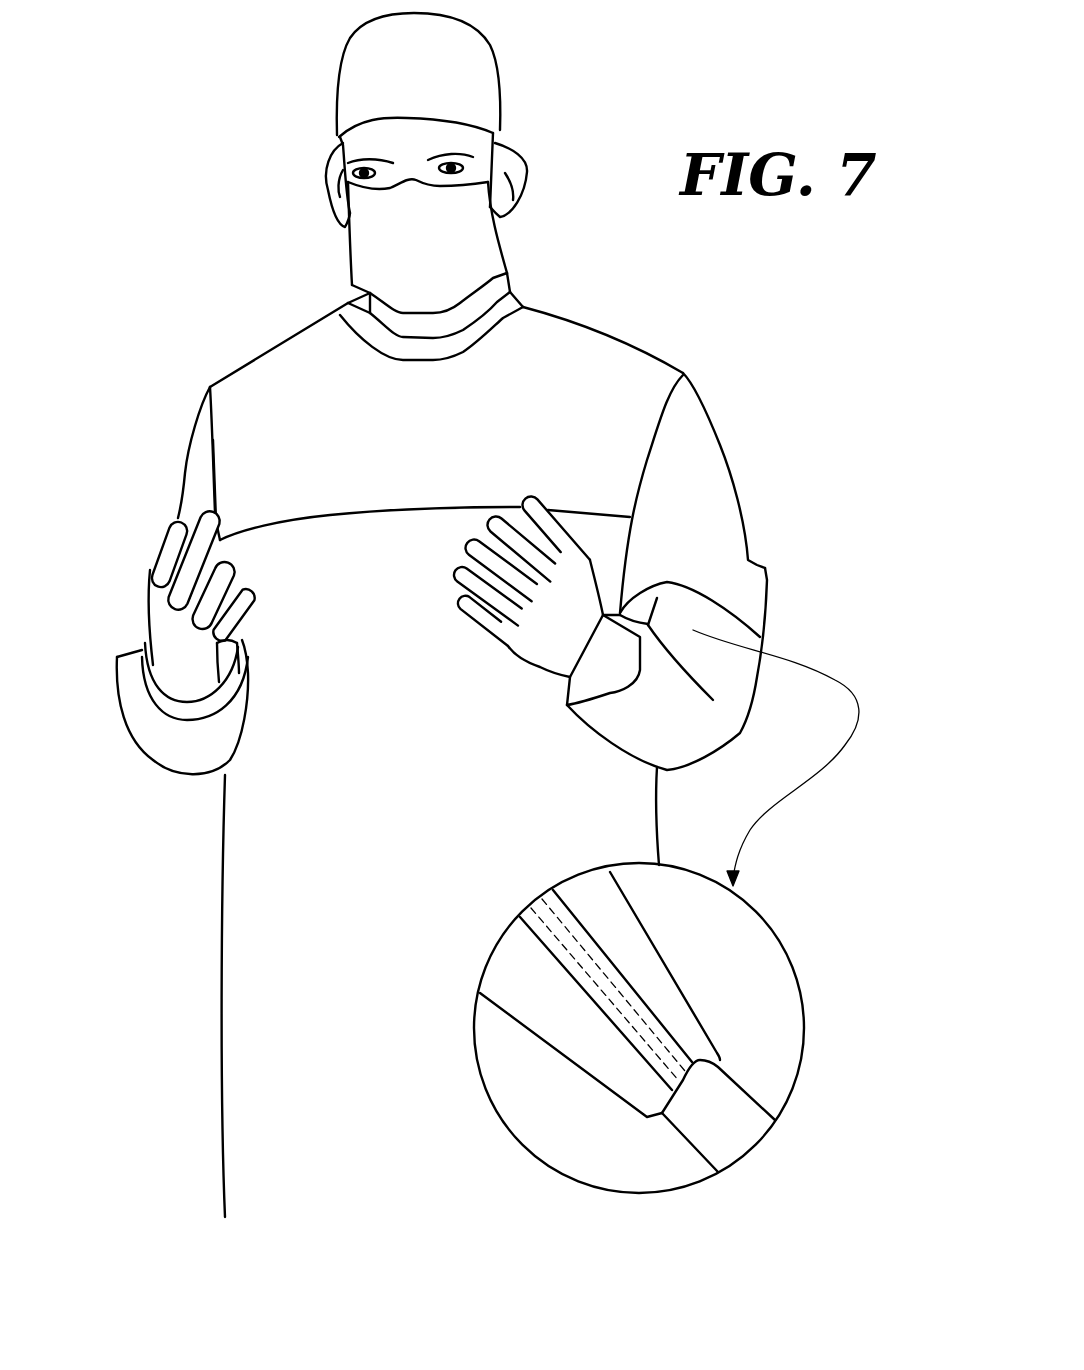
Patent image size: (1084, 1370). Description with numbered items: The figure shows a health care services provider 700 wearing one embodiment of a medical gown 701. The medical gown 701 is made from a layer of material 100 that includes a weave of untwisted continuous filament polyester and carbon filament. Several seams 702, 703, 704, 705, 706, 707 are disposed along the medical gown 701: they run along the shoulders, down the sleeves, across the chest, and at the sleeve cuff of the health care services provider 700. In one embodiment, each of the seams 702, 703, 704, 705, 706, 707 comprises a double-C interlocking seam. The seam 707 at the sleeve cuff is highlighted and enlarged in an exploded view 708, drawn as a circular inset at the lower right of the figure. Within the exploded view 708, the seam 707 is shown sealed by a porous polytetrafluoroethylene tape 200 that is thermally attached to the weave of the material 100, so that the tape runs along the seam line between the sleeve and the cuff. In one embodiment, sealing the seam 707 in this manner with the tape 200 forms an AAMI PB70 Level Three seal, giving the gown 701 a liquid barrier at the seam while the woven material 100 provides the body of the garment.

The layer of material 100 is at (440, 745).
The porous polytetrafluoroethylene tape 200 is at (635, 1040).
The health care services provider 700 is at (340, 180).
The medical gown 701 is at (223, 420).
The seam 702 is at (597, 323).
The seam 703 is at (277, 338).
The seam 704 is at (217, 480).
The seam 705 is at (643, 488).
The seam 706 is at (402, 513).
The seam 707 is at (720, 597).
The exploded view 708 is at (780, 950).